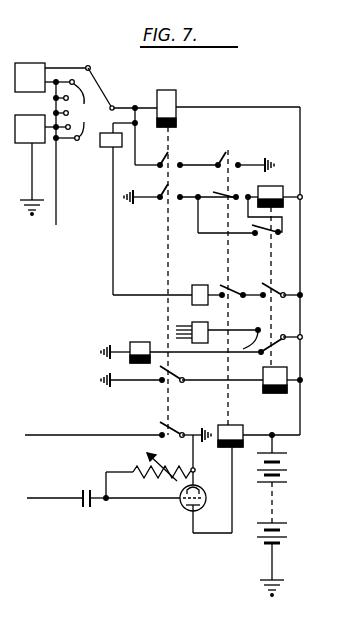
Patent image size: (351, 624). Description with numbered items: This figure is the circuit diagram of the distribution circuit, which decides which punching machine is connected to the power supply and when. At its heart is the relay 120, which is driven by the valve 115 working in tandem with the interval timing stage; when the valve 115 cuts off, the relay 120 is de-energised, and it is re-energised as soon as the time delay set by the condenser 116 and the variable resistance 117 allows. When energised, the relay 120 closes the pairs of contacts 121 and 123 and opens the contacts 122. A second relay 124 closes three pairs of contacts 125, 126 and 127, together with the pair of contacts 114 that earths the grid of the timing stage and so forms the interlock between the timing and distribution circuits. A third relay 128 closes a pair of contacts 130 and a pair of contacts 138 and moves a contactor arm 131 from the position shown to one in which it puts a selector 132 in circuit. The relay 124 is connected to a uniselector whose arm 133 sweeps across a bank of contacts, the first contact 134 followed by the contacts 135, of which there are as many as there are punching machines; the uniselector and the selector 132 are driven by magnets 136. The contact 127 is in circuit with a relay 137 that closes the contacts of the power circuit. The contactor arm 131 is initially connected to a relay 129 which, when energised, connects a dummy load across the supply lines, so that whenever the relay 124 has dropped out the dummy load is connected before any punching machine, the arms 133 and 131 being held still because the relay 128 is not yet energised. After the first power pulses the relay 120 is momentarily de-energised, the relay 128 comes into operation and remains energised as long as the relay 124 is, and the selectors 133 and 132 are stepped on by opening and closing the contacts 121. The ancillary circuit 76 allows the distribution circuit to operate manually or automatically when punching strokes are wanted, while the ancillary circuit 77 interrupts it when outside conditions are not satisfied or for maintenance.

The ancillary circuit 76 is at (33, 68).
The ancillary circuit 77 is at (26, 146).
The first contact of uniselector bank 134 is at (88, 65).
The uniselector arm 133 is at (103, 90).
The bank of contacts 135 is at (68, 113).
The magnets 136 is at (107, 146).
The second relay 124 is at (172, 97).
The pair of contacts 125 is at (163, 157).
The pair of contacts 123 is at (219, 156).
The third relay 128 is at (280, 186).
The contacts 122 is at (228, 193).
The pair of contacts 126 is at (165, 200).
The pair of contacts 138 is at (263, 234).
The pair of contacts 121 is at (222, 290).
The pair of contacts 130 is at (264, 287).
The contactor arm 131 is at (257, 330).
The selector 132 is at (191, 323).
The relay 129 is at (131, 344).
The pair of contacts 127 is at (172, 374).
The relay 137 is at (261, 382).
The pair of contacts 114 is at (161, 428).
The relay 120 is at (243, 428).
The variable resistance 117 is at (142, 468).
The condenser 116 is at (86, 511).
The valve 115 is at (183, 508).